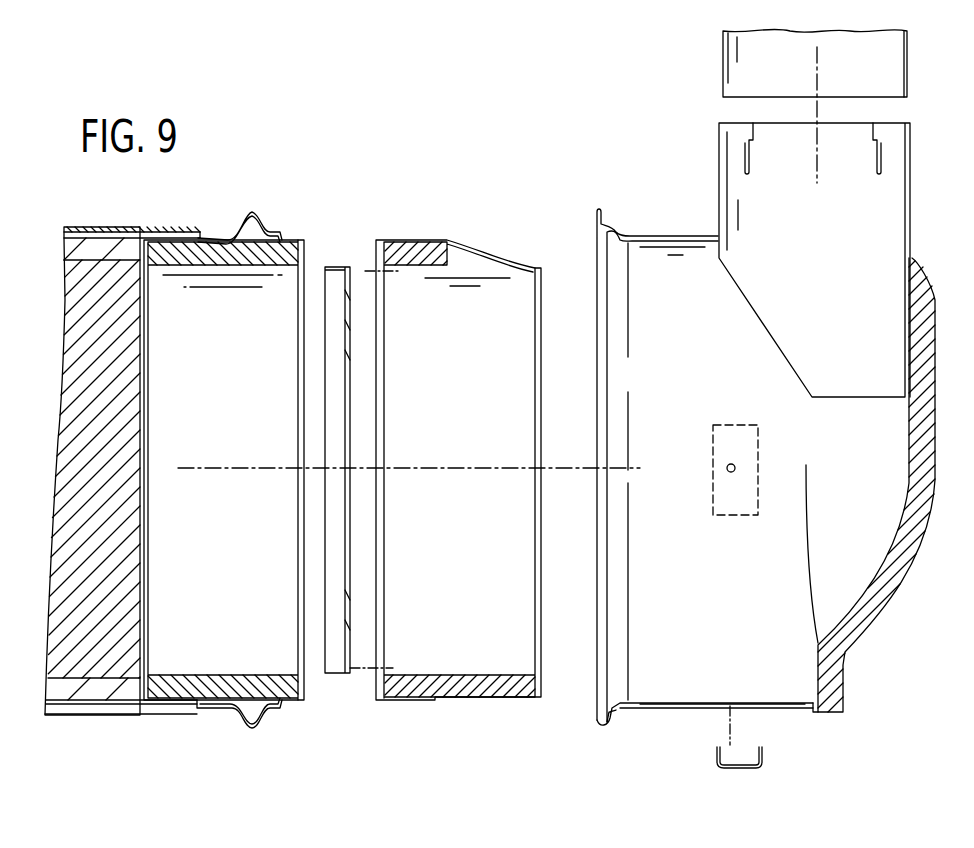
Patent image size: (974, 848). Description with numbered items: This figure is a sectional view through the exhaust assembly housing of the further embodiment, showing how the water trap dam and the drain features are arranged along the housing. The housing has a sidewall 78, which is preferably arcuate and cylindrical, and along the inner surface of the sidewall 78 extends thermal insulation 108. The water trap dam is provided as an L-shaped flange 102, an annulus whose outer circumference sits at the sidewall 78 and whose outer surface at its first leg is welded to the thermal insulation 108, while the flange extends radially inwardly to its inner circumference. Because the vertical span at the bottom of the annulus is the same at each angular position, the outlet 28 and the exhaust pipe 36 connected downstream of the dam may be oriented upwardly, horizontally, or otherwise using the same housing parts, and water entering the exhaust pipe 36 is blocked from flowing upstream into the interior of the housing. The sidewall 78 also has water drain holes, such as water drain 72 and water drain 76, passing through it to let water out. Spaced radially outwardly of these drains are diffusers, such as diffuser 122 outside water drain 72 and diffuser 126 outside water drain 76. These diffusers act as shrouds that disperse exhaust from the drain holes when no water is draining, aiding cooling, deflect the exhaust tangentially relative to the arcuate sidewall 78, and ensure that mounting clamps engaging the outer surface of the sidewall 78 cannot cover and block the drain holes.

The outlet 28 is at (908, 183).
The exhaust pipe 36 is at (907, 62).
The water drain 72 is at (733, 703).
The water drain 76 is at (727, 467).
The sidewall 78 is at (668, 707).
The L-shaped flange 102 is at (350, 627).
The thermal insulation 108 is at (407, 690).
The diffuser 122 is at (765, 761).
The diffuser 126 is at (760, 437).